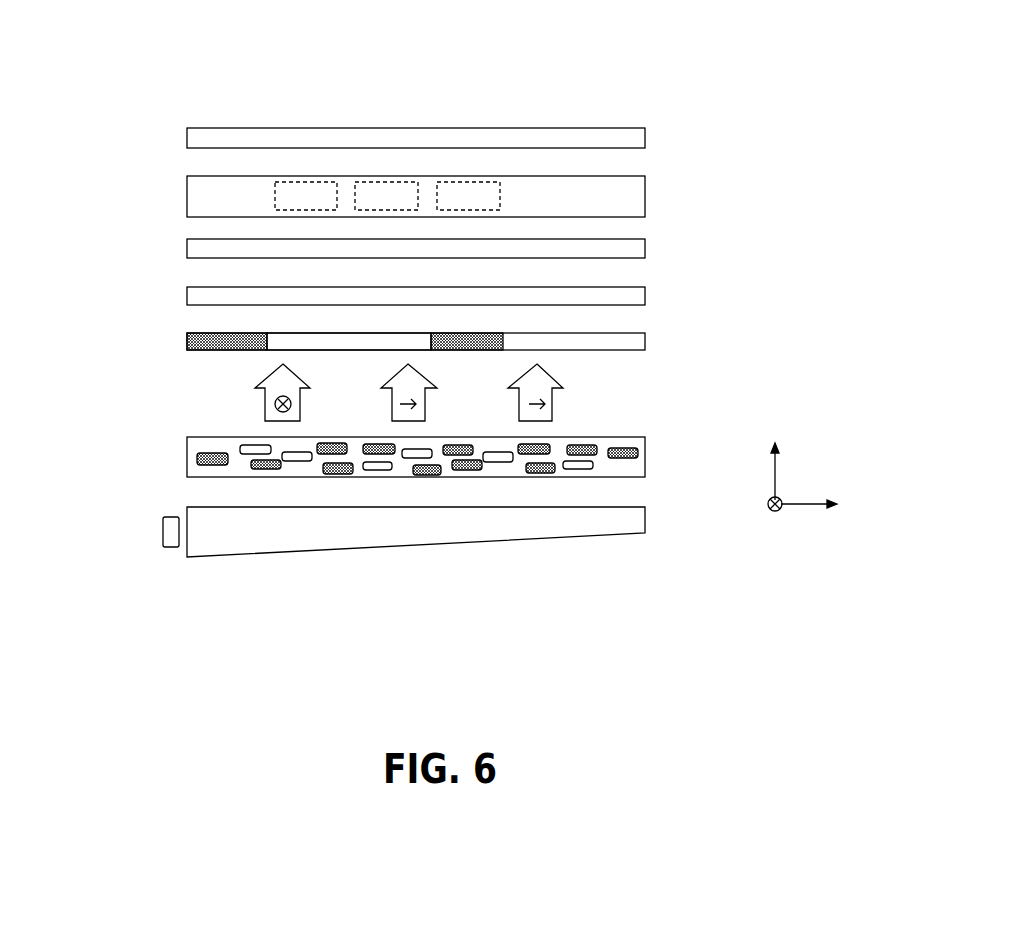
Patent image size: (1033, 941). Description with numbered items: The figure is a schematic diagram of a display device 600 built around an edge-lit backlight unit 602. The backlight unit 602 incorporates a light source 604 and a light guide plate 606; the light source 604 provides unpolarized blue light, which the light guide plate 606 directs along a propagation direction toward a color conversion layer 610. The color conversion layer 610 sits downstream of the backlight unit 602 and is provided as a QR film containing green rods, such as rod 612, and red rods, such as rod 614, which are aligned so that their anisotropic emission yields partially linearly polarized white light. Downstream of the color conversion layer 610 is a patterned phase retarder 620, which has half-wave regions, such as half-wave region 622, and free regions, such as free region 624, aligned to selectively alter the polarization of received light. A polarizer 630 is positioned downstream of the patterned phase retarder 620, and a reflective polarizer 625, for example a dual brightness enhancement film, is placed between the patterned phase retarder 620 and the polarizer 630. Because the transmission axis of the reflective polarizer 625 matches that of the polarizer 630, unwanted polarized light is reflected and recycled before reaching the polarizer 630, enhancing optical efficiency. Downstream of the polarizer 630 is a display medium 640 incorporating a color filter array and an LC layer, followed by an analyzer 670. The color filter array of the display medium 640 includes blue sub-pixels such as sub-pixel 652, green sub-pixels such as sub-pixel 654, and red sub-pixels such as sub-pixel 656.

The display device 600 is at (72, 44).
The backlight unit 602 is at (187, 585).
The light source 604 is at (162, 531).
The light guide plate 606 is at (648, 520).
The color conversion layer 610 is at (449, 448).
The green rod 612 is at (300, 462).
The red rod 614 is at (465, 473).
The patterned phase retarder 620 is at (451, 318).
The half-wave region 622 is at (470, 333).
The free region 624 is at (315, 333).
The reflective polarizer 625 is at (648, 296).
The polarizer 630 is at (648, 250).
The display medium 640 is at (449, 179).
The blue sub-pixel 652 is at (485, 204).
The green sub-pixel 654 is at (323, 204).
The red sub-pixel 656 is at (404, 204).
The analyzer 670 is at (648, 137).